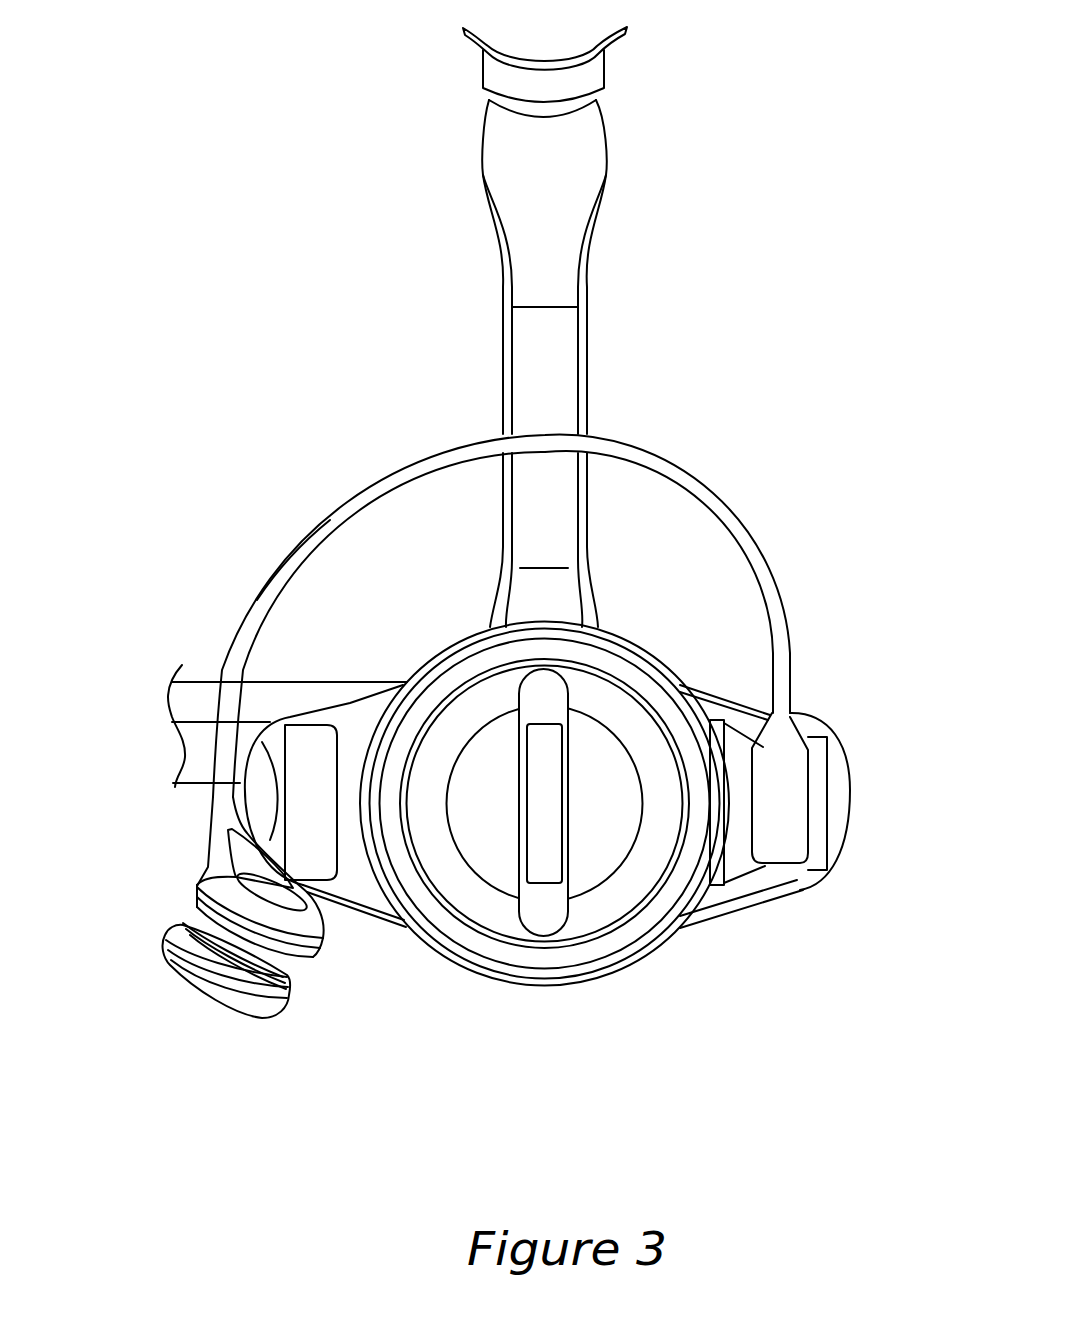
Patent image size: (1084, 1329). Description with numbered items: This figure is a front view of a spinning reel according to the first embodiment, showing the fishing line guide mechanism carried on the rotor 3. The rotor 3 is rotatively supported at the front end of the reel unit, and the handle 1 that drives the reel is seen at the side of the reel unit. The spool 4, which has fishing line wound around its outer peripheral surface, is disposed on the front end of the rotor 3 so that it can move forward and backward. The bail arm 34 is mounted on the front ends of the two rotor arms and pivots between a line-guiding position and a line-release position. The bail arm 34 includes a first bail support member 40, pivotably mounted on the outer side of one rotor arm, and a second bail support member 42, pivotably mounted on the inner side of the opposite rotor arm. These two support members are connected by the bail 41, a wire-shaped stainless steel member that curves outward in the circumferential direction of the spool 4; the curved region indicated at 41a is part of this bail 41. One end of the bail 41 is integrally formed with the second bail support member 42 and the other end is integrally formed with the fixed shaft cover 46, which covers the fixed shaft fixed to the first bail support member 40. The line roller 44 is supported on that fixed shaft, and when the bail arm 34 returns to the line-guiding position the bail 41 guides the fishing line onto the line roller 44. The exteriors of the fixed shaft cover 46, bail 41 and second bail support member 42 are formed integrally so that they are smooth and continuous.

The handle 1 is at (199, 682).
The rotor 3 is at (798, 891).
The spool 4 is at (480, 942).
The bail arm 34 is at (167, 892).
The first bail support member 40 is at (250, 768).
The bail 41 is at (733, 522).
The strap arch portion 41a is at (310, 540).
The second bail support member 42 is at (787, 788).
The line roller 44 is at (183, 923).
The fixed shaft cover 46 is at (217, 860).